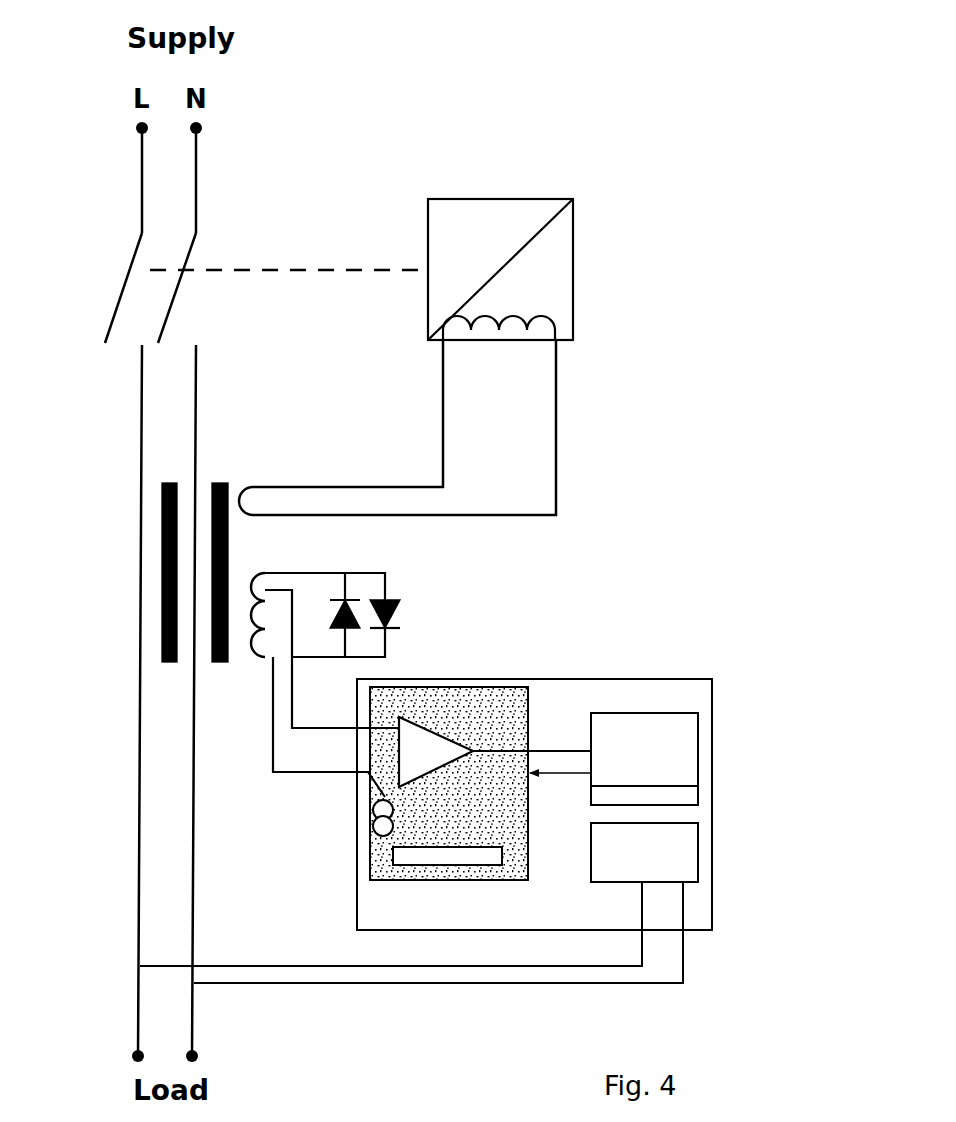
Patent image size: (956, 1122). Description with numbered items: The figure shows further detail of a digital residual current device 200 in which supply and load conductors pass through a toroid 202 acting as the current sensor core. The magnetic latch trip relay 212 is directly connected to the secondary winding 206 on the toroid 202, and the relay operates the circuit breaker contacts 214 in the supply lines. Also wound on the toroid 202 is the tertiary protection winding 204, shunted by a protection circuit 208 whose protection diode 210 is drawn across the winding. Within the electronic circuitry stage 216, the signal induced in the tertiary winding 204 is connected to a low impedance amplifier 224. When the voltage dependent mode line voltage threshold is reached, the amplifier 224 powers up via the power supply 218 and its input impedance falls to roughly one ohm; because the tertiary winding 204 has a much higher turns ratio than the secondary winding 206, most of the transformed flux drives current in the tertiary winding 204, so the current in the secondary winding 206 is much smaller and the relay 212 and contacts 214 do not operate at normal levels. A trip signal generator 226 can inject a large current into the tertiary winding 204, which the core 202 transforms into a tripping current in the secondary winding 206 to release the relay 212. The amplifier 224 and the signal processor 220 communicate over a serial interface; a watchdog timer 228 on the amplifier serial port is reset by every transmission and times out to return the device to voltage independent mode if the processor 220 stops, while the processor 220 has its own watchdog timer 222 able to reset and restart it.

The residual current device 200 is at (612, 508).
The toroid 202 is at (157, 651).
The tertiary protection winding 204 is at (257, 663).
The secondary winding 206 is at (245, 482).
The protection circuit 208 is at (306, 572).
The protection diode 210 is at (393, 592).
The magnetic latch trip relay 212 is at (578, 277).
The contacts 214 is at (115, 275).
The electronic circuitry stage 216 is at (570, 676).
The power supply 218 is at (703, 860).
The signal processor 220 is at (701, 720).
The watchdog timer 222 is at (701, 794).
The low impedance amplifier 224 is at (435, 716).
The trip signal generator 226 is at (378, 836).
The watchdog timer 228 is at (391, 866).